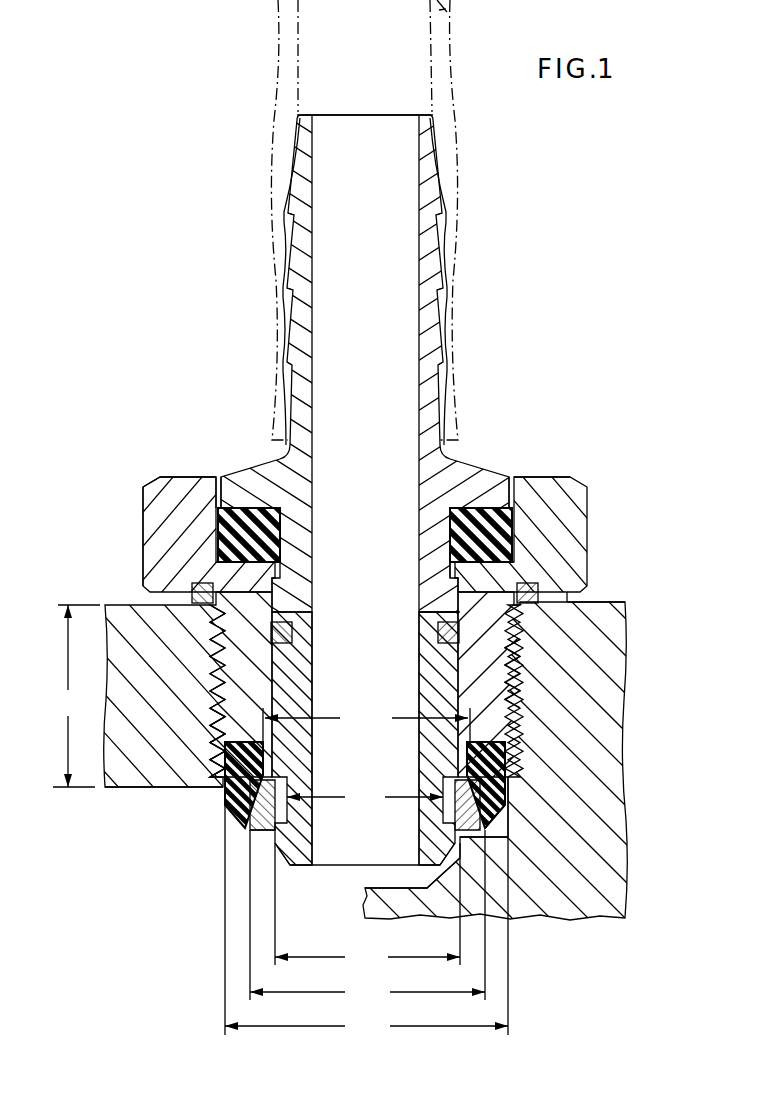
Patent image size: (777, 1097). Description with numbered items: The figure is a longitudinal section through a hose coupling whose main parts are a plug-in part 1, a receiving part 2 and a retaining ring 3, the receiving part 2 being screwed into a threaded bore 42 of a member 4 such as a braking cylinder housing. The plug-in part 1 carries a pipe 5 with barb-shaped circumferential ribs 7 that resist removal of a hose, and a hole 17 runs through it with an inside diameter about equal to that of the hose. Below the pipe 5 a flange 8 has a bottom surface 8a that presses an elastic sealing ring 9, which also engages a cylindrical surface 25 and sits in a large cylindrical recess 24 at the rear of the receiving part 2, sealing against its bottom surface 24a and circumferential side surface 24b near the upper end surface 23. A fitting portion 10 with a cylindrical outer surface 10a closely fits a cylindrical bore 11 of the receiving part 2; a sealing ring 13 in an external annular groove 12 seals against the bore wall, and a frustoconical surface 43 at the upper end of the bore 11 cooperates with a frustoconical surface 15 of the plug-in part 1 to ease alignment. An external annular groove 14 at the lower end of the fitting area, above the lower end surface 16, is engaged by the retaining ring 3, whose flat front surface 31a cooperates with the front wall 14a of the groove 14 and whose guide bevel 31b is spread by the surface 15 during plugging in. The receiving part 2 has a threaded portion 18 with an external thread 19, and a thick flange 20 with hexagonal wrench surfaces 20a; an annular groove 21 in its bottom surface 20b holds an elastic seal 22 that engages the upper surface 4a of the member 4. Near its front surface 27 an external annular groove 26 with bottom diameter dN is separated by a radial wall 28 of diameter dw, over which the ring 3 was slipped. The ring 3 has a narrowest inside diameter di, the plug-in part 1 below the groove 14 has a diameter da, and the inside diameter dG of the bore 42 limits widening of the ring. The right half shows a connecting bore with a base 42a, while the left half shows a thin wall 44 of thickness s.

The plug-in part 1 is at (420, 450).
The receiving part 2 is at (362, 498).
The retaining ring 3 is at (406, 837).
The member 4 is at (388, 750).
The upper surface of member 4a is at (598, 603).
The pipe 5 is at (438, 265).
The circumferential ribs 7 is at (445, 213).
The flange 8 is at (240, 505).
The bottom surface of flange 8a is at (470, 512).
The elastic sealing ring 9 is at (235, 548).
The fitting portion 10 is at (365, 742).
The cylindrical outer surface 10a is at (460, 700).
The cylindrical bore 11 is at (235, 780).
The external annular groove 12 is at (445, 620).
The sealing ring 13 is at (292, 632).
The external annular groove 14 is at (252, 812).
The front wall of external groove 14a is at (512, 828).
The frustoconical surface 15 is at (258, 850).
The lower end surface 16 is at (322, 868).
The hole 17 is at (305, 126).
The threaded portion 18 is at (205, 668).
The external thread 19 is at (215, 742).
The flange 20 is at (150, 490).
The external surfaces 20a is at (146, 503).
The bottom surface of flange 20b is at (200, 600).
The annular groove 21 is at (568, 606).
The annular elastic seal 22 is at (535, 595).
The upper end surface 23 is at (192, 478).
The cylindrical recess 24 is at (218, 505).
The bottom surface of recess 24a is at (224, 530).
The circumferential side surface of recess 24b is at (512, 528).
The cylindrical surface 25 is at (512, 498).
The external annular groove 26 is at (485, 760).
The front surface of receiving part 27 is at (510, 805).
The radial wall 28 is at (523, 780).
The flat front surface 31a is at (268, 832).
The frustoconical surface 31b is at (465, 815).
The threaded bore 42 is at (523, 672).
The base 42a is at (500, 918).
The frustoconical surface 43 is at (455, 568).
The thin walls 44 is at (148, 775).
The wall thickness s is at (76, 696).
The diameter of groove bottom surface dN is at (366, 725).
The inside diameter of retaining ring di is at (365, 800).
The diameter of plug-in part below groove da is at (367, 909).
The diameter of radial wall dw is at (367, 920).
The inside diameter of threaded bore dG is at (366, 915).